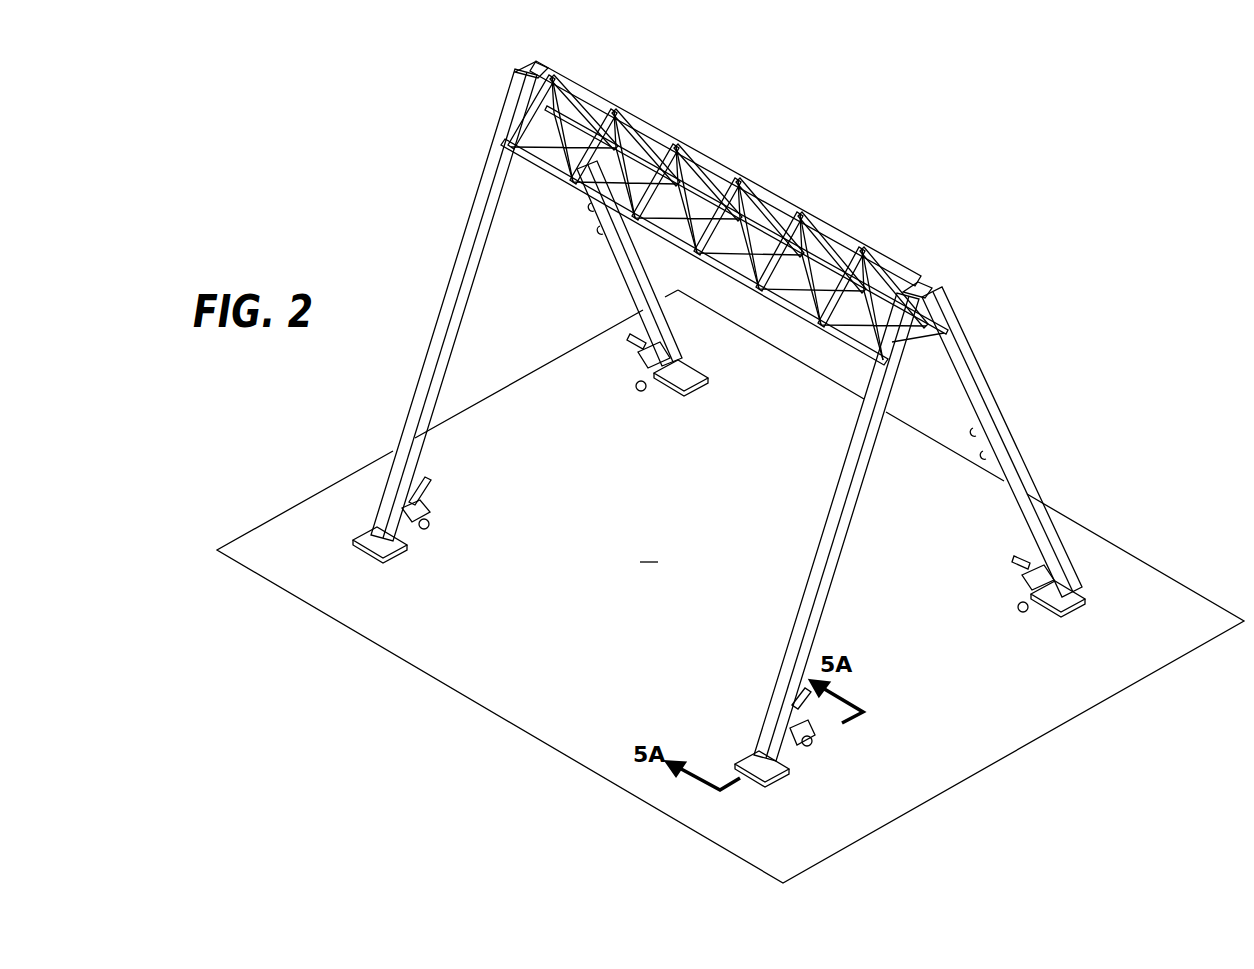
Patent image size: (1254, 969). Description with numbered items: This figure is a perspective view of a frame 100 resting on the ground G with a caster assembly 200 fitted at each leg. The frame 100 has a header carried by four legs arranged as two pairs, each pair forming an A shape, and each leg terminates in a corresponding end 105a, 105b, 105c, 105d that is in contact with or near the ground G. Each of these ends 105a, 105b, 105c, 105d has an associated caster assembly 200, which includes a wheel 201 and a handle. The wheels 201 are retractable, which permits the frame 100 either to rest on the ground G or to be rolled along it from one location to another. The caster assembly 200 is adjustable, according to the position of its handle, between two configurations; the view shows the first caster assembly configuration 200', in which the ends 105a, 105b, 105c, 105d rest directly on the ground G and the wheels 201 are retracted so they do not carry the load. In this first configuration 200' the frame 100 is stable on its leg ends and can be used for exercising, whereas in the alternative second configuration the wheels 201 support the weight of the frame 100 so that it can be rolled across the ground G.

The frame 100 is at (483, 86).
The caster assembly 200 is at (281, 480).
The end 105a is at (357, 501).
The end 105b is at (698, 341).
The end 105c is at (760, 708).
The end 105d is at (1089, 556).
The first caster assembly configuration 200' is at (728, 562).
The wheel 201 is at (428, 520).
The ground G is at (730, 586).